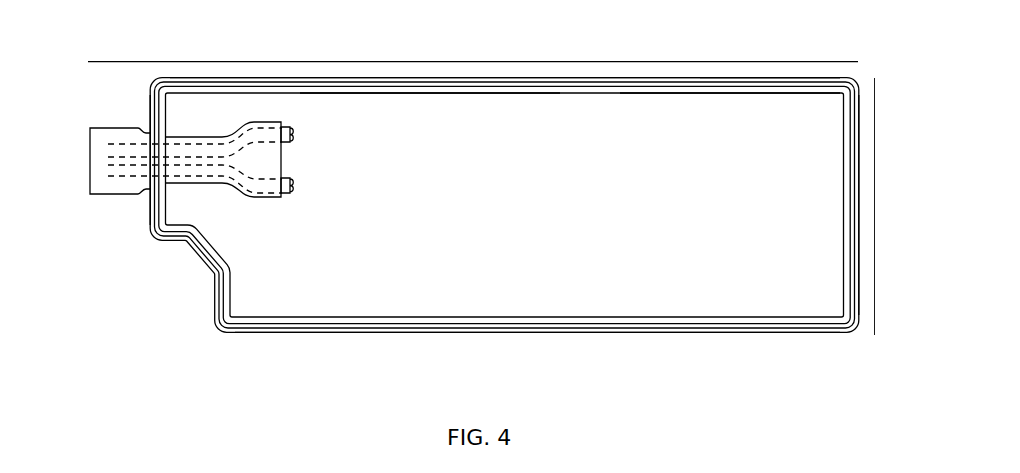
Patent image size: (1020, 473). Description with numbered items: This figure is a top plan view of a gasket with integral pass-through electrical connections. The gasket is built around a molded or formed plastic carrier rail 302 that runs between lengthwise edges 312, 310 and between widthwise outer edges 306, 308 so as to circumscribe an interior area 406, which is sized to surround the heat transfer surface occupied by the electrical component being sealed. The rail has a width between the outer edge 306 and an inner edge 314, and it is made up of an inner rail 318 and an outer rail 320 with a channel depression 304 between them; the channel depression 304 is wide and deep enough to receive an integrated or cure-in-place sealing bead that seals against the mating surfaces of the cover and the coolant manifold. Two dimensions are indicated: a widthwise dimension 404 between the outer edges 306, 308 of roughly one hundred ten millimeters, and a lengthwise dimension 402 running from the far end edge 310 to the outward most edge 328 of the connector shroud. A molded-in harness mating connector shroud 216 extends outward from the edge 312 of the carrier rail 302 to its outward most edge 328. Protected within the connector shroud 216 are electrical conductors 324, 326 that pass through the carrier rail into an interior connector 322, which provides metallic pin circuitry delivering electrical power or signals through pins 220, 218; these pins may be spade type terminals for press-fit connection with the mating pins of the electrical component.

The harness mating connector shroud 216 is at (110, 195).
The pin 218 is at (293, 181).
The pin 220 is at (293, 130).
The carrier rail 302 is at (538, 93).
The channel depression 304 is at (705, 80).
The outer edge 306 is at (410, 78).
The outer edge 308 is at (722, 333).
The lengthwise edge 310 is at (859, 213).
The lengthwise edge 312 is at (150, 213).
The inner edge 314 is at (425, 93).
The inner rail 318 is at (730, 94).
The outer rail 320 is at (747, 77).
The interior connector 322 is at (236, 192).
The electrical conductor 324 is at (110, 145).
The electrical conductor 326 is at (108, 176).
The outward most edge 328 is at (108, 158).
The lengthwise dimension 402 is at (197, 62).
The widthwise dimension 404 is at (875, 155).
The interior area 406 is at (400, 267).